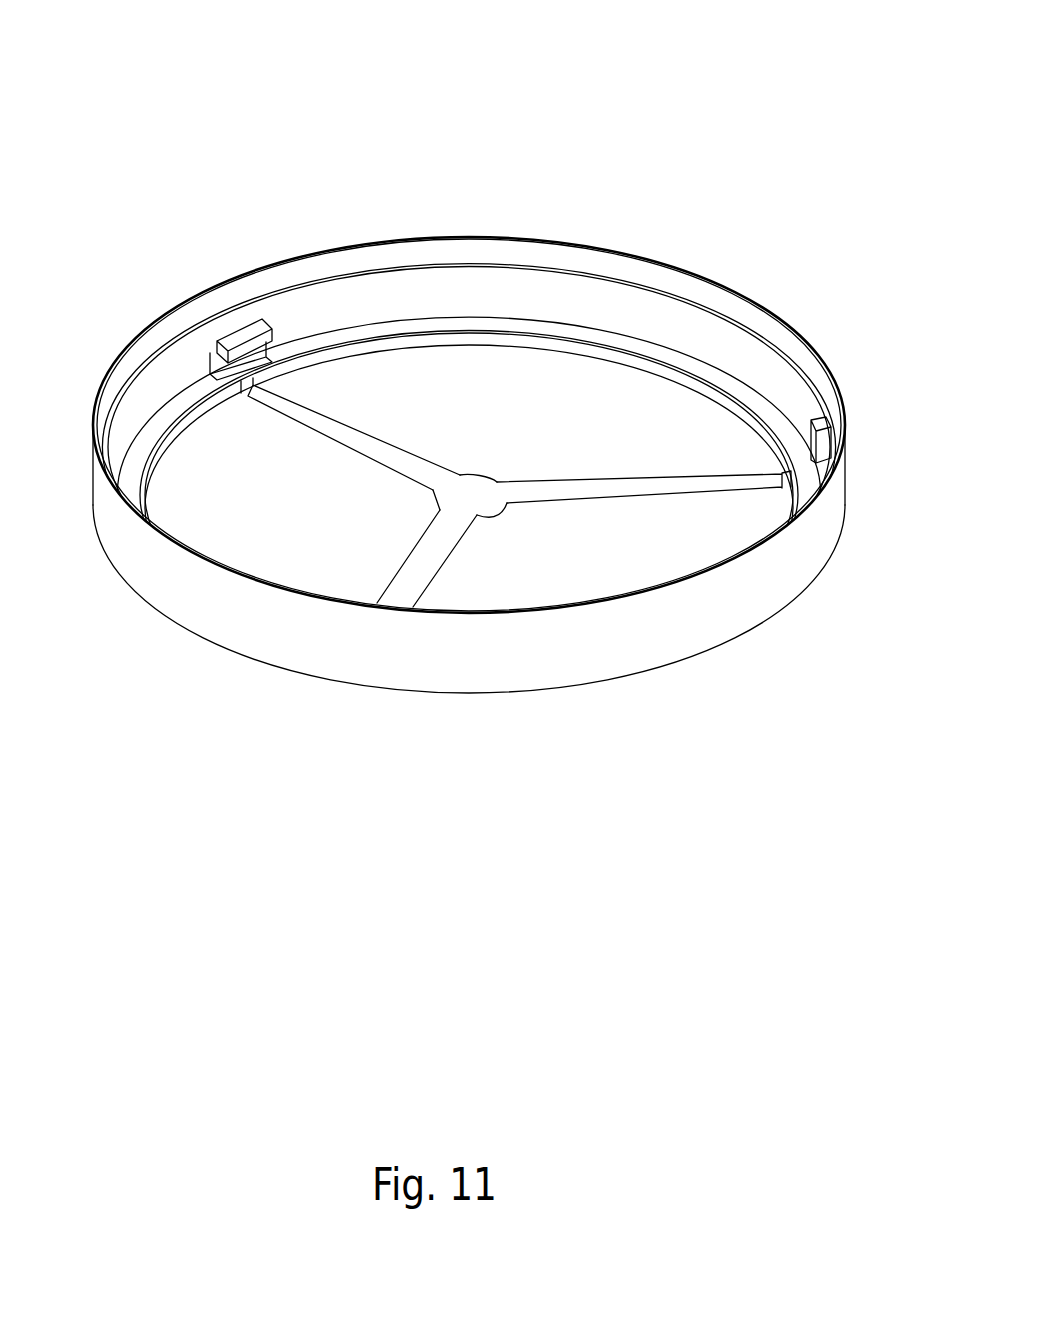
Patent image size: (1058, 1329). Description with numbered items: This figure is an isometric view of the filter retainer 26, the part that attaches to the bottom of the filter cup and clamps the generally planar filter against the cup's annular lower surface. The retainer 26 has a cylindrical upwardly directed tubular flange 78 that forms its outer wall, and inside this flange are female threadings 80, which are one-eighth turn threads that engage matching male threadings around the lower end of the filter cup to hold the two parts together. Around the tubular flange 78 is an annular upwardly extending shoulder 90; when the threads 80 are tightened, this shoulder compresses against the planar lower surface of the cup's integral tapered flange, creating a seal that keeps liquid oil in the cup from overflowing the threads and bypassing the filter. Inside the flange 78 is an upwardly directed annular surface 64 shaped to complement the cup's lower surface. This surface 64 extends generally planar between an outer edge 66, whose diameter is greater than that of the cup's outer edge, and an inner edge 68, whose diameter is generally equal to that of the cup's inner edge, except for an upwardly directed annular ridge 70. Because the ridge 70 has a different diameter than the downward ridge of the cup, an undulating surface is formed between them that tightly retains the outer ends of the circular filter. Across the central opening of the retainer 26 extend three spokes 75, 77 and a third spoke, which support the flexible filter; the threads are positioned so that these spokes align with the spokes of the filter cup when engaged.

The filter retainer 26 is at (472, 381).
The upwardly directed annular surface 64 is at (775, 420).
The outer edge 66 is at (760, 362).
The inner edge 68 is at (572, 355).
The upwardly directed annular ridge 70 is at (165, 435).
The spoke 75 is at (340, 420).
The spoke 77 is at (427, 547).
The cylindrical upwardly directed tubular flange 78 is at (787, 556).
The female threadings 80 is at (215, 340).
The annular upwardly extending shoulder 90 is at (650, 292).